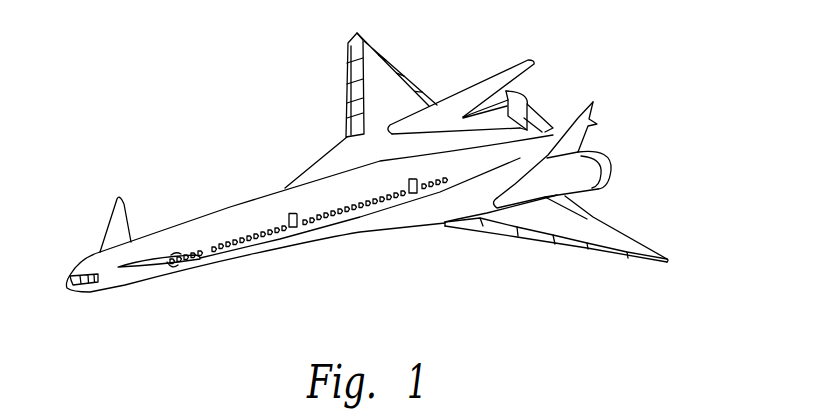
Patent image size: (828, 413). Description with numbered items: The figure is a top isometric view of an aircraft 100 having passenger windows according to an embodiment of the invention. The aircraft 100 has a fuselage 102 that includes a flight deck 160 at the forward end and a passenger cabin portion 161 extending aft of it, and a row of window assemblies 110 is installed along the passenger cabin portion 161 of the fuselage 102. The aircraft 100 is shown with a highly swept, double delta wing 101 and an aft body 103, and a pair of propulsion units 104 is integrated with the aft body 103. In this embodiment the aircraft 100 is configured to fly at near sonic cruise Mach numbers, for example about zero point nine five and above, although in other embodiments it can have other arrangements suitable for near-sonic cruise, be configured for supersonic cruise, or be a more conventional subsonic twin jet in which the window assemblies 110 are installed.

The aircraft 100 is at (323, 252).
The double delta wing 101 is at (468, 227).
The fuselage 102 is at (203, 216).
The aft body 103 is at (563, 100).
The propulsion units 104 is at (462, 87).
The window assemblies 110 is at (367, 192).
The flight deck 160 is at (100, 268).
The passenger cabin portion 161 is at (198, 237).